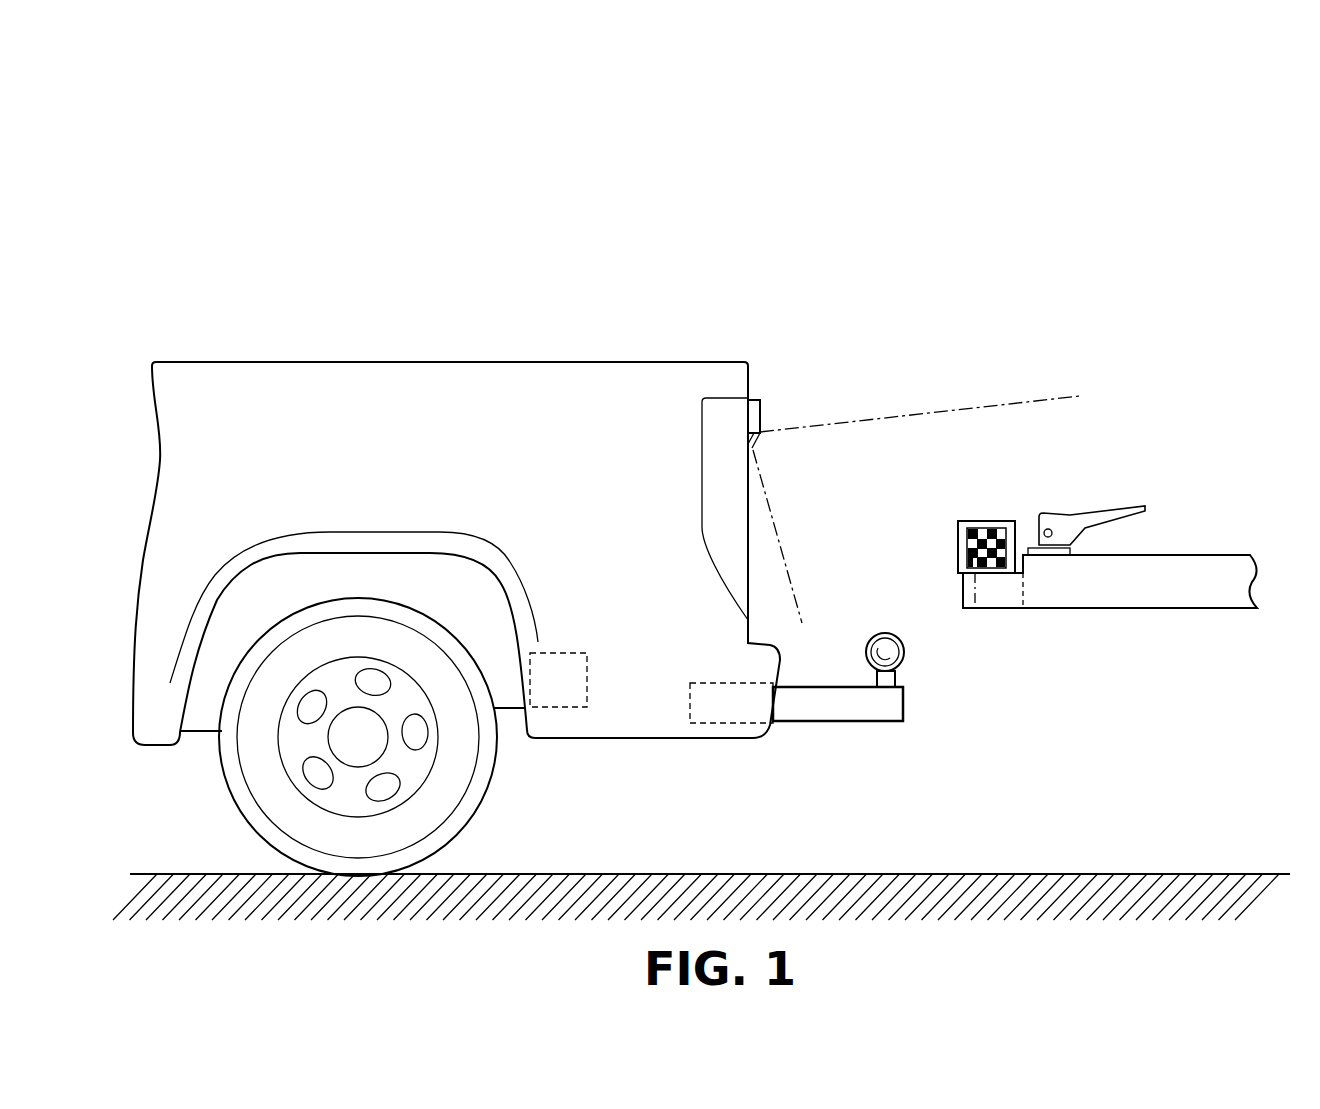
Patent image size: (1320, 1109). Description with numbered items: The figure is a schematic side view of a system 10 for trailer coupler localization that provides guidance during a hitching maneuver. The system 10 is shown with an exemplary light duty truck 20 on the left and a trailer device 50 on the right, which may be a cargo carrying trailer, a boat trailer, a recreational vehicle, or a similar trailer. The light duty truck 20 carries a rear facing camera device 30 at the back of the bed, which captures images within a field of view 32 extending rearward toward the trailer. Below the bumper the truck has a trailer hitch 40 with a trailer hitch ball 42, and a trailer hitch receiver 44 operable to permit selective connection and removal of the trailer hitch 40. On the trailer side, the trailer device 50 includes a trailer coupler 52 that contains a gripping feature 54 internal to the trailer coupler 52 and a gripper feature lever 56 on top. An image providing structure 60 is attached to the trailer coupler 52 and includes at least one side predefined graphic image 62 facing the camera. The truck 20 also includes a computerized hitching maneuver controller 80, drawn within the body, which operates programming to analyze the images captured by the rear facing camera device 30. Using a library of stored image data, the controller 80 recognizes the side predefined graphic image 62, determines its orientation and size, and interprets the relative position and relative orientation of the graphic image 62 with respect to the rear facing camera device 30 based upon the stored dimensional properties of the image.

The system 10 is at (373, 138).
The light duty truck 20 is at (442, 378).
The rear facing camera device 30 is at (762, 417).
The field of view 32 is at (879, 440).
The trailer hitch 40 is at (792, 723).
The trailer hitch ball 42 is at (905, 662).
The trailer hitch receiver 44 is at (713, 723).
The trailer device 50 is at (1198, 563).
The trailer coupler 52 is at (995, 610).
The gripping feature 54 is at (1023, 557).
The gripper feature lever 56 is at (1072, 518).
The image providing structure 60 is at (987, 520).
The side predefined graphic image 62 is at (965, 553).
The computerized hitching maneuver controller 80 is at (562, 707).